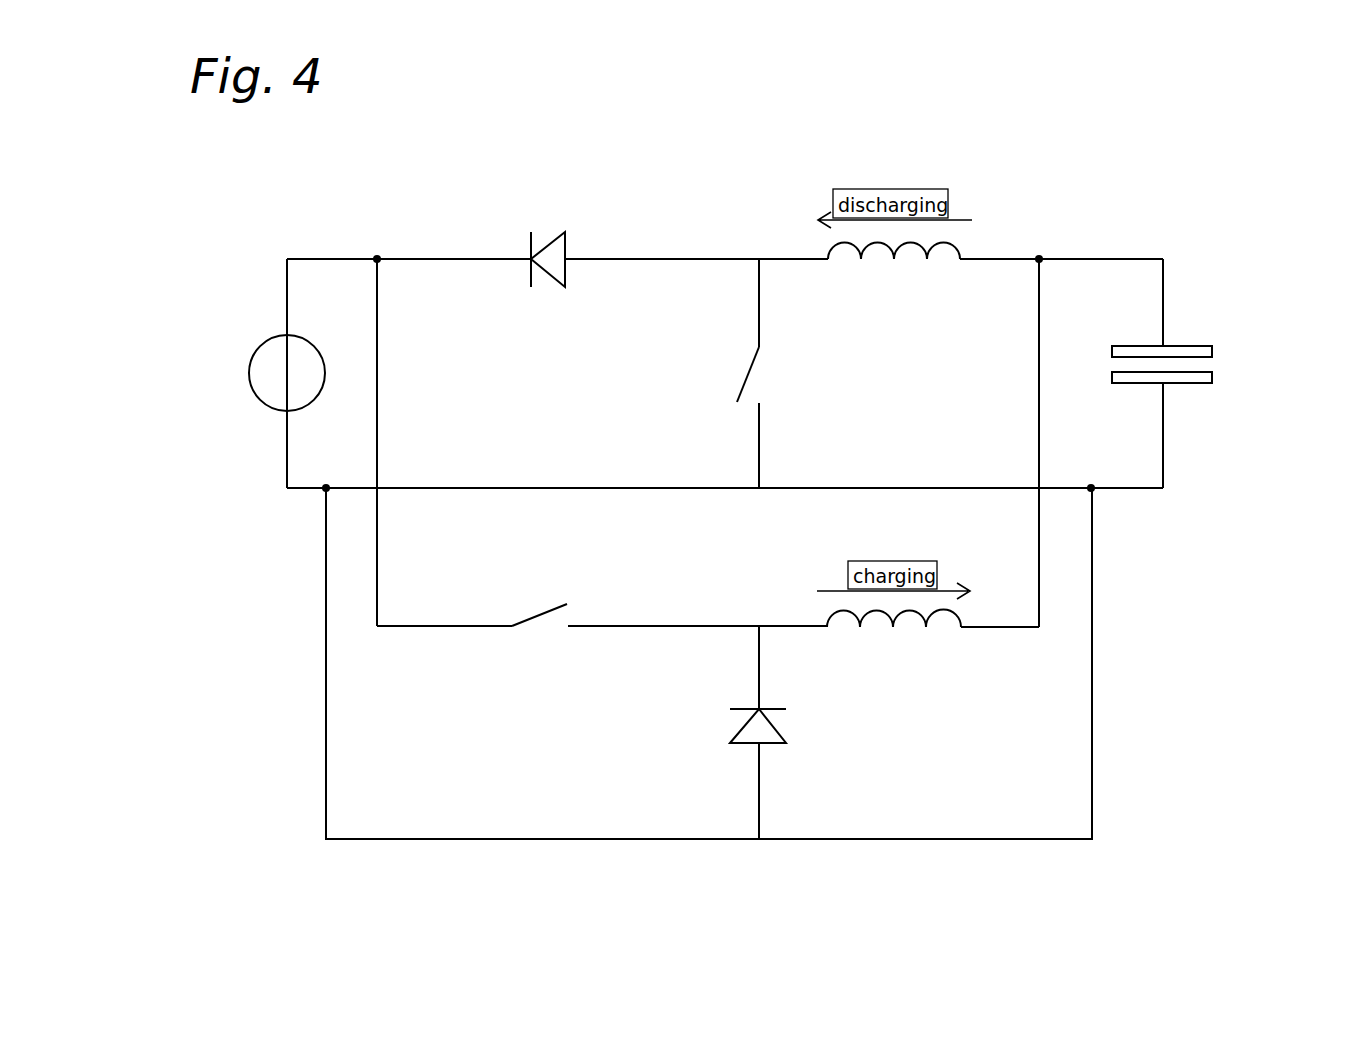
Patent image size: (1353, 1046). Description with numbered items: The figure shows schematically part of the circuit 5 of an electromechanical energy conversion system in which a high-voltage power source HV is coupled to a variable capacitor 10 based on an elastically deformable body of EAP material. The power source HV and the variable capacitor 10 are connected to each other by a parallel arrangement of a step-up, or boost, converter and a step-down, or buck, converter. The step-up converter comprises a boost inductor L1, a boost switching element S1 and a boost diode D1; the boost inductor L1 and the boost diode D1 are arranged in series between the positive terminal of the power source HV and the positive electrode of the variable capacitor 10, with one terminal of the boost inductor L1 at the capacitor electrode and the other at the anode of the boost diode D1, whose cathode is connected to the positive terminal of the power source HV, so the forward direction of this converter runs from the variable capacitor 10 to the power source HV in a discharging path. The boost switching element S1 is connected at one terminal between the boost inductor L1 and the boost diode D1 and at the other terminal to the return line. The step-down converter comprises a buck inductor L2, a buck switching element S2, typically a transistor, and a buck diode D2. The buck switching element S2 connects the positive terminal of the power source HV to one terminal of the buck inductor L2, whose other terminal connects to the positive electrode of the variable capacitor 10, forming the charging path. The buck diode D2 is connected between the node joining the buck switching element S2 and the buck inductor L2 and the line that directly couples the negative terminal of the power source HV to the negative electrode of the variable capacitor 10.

The circuit 5 is at (1019, 234).
The variable capacitor 10 is at (1142, 349).
The power source HV is at (262, 366).
The boost diode D1 is at (559, 253).
The boost switching element S1 is at (748, 373).
The boost inductor L1 is at (908, 256).
The buck switching element S2 is at (543, 612).
The buck inductor L2 is at (905, 625).
The buck diode D2 is at (771, 737).